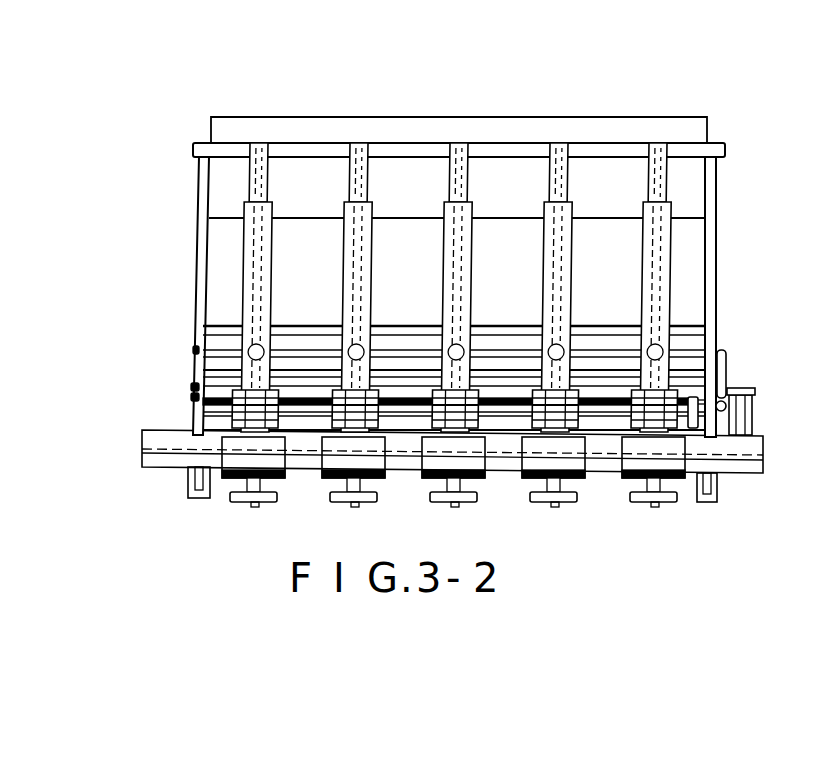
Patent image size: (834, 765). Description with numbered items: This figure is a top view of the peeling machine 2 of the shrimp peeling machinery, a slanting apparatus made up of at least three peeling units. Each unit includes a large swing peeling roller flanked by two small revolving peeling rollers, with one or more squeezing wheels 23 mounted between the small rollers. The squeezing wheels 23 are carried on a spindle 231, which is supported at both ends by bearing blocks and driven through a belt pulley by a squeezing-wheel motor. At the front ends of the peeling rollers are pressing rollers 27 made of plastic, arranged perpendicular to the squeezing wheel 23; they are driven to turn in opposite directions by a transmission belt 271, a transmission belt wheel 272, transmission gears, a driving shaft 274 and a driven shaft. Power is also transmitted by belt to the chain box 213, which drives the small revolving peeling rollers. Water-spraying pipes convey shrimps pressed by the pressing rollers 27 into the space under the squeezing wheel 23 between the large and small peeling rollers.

The peeling machine 2 is at (183, 192).
The squeezing wheel 23 is at (247, 333).
The spindle 231 is at (218, 345).
The pressing roller 27 is at (196, 388).
The driving shaft 274 is at (193, 397).
The chain box 213 is at (180, 433).
The transmission belt 271 is at (727, 360).
The transmission belt wheel 272 is at (753, 402).